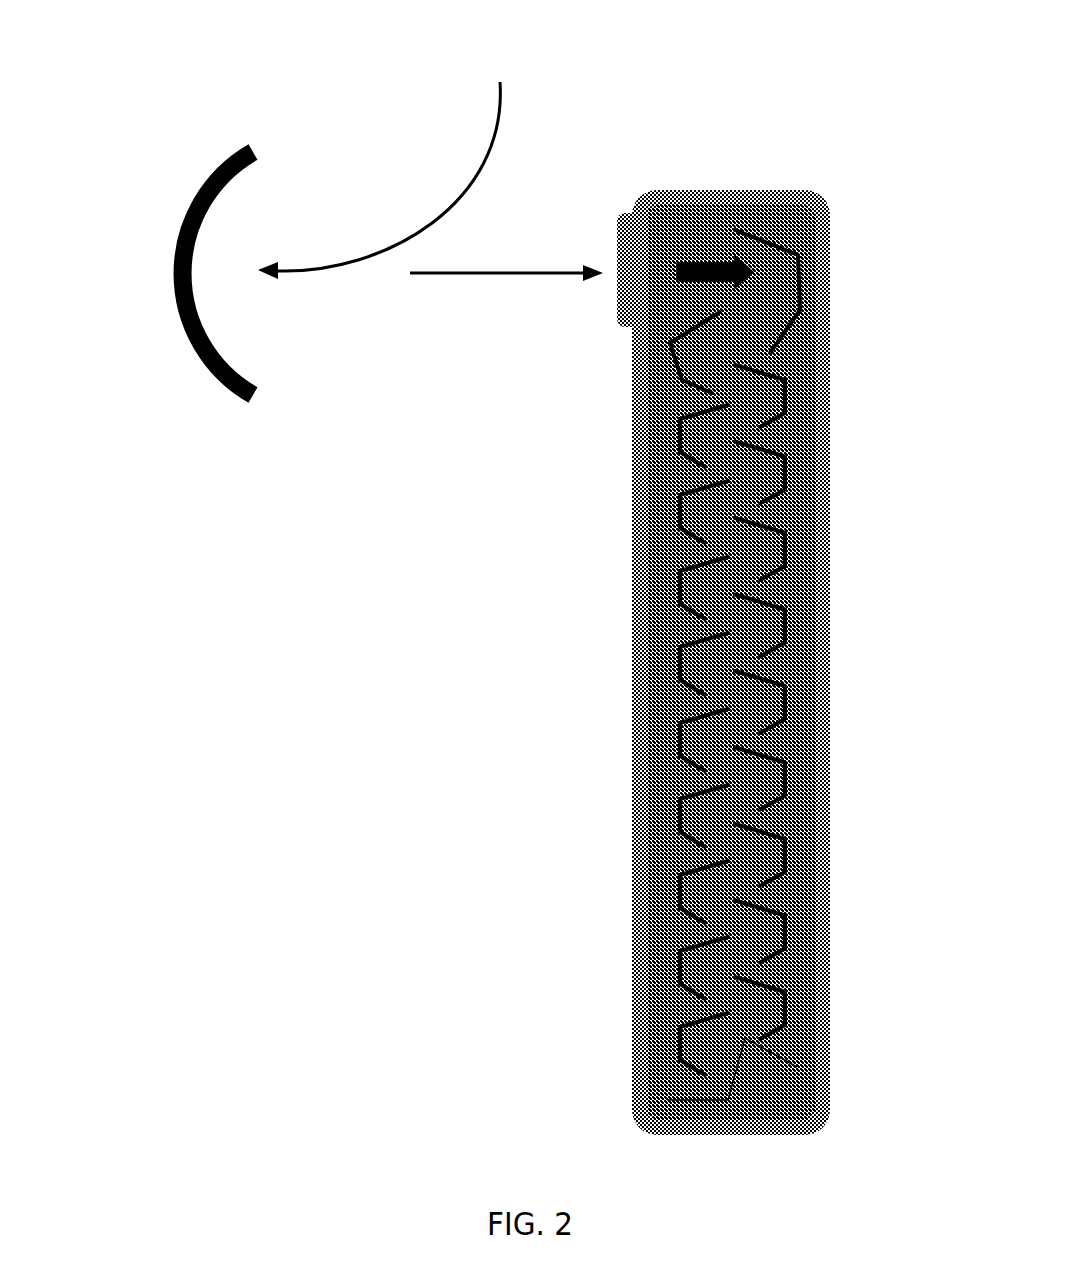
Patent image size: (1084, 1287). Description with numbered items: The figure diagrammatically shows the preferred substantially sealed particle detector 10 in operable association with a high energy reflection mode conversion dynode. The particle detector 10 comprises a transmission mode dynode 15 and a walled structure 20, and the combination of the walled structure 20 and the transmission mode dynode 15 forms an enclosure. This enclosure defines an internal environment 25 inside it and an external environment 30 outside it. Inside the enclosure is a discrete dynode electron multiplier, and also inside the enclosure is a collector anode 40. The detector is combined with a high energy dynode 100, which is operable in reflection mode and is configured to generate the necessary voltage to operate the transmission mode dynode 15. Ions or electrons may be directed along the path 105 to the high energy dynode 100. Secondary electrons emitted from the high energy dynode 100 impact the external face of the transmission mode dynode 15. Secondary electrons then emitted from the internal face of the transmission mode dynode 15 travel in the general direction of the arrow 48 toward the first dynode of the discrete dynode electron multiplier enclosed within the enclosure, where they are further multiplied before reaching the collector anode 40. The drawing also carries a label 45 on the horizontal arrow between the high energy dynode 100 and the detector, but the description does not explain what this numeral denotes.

The particle detector 10 is at (711, 600).
The transmission mode dynode 15 is at (620, 235).
The walled structure 20 is at (632, 713).
The internal environment 25 is at (667, 480).
The external environment 30 is at (570, 634).
The collector anode 40 is at (733, 1078).
The airflow direction arrow 45 is at (522, 274).
The arrow 48 is at (707, 260).
The high energy dynode 100 is at (203, 370).
The path 105 is at (470, 183).